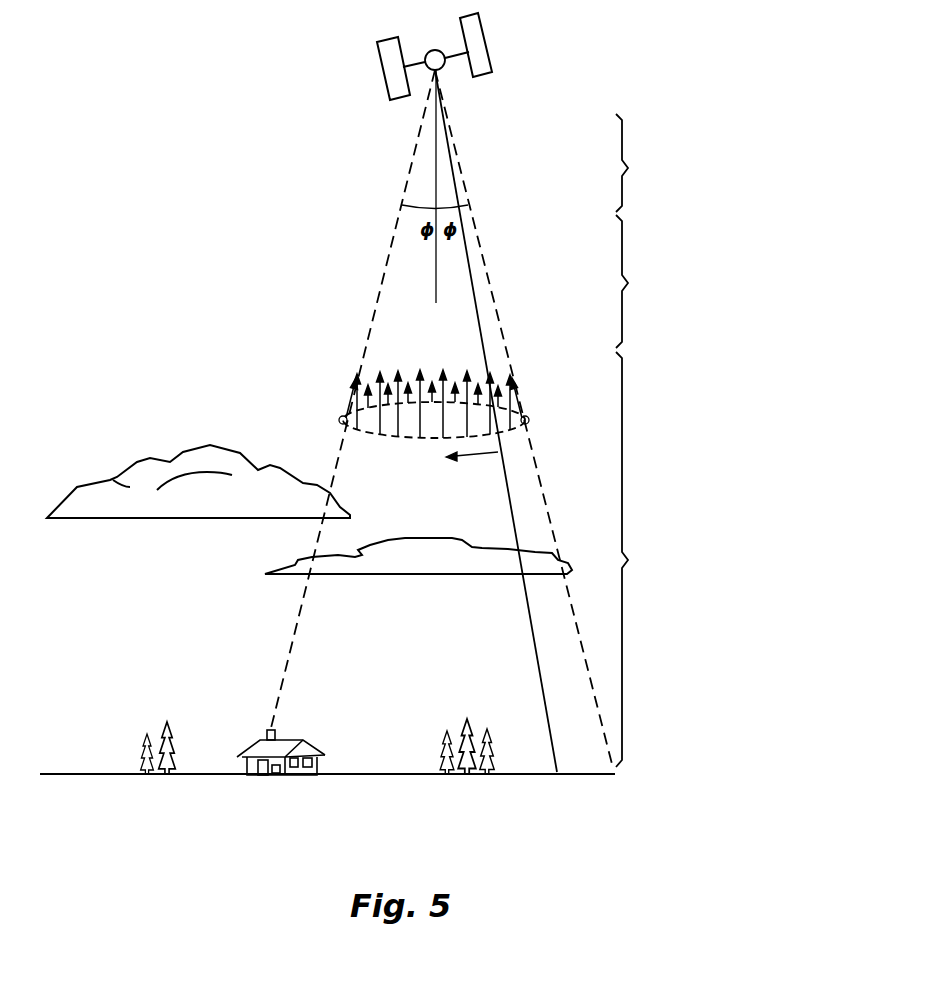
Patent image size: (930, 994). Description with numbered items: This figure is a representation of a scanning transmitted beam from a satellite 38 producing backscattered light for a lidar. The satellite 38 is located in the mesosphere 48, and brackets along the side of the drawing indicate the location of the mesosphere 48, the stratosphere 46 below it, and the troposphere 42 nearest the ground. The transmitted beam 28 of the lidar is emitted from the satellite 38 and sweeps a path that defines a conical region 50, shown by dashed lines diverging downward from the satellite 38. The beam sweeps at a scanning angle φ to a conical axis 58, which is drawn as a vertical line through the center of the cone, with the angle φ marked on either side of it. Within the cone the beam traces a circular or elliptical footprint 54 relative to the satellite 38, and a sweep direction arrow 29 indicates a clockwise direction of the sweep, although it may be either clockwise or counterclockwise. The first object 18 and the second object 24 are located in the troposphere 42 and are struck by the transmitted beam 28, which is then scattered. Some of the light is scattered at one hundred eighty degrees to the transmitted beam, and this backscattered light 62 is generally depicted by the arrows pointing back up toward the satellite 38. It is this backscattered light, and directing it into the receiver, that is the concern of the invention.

The satellite 38 is at (492, 56).
The conical region 50 is at (413, 242).
The conical axis 58 is at (436, 283).
The transmitted beam 28 is at (467, 252).
The backscattered light 62 is at (455, 352).
The first object 18 is at (528, 419).
The footprint 54 is at (431, 430).
The second object 24 is at (340, 418).
The sweep direction arrow 29 is at (480, 455).
The mesosphere 48 is at (641, 163).
The stratosphere 46 is at (641, 281).
The troposphere 42 is at (641, 559).